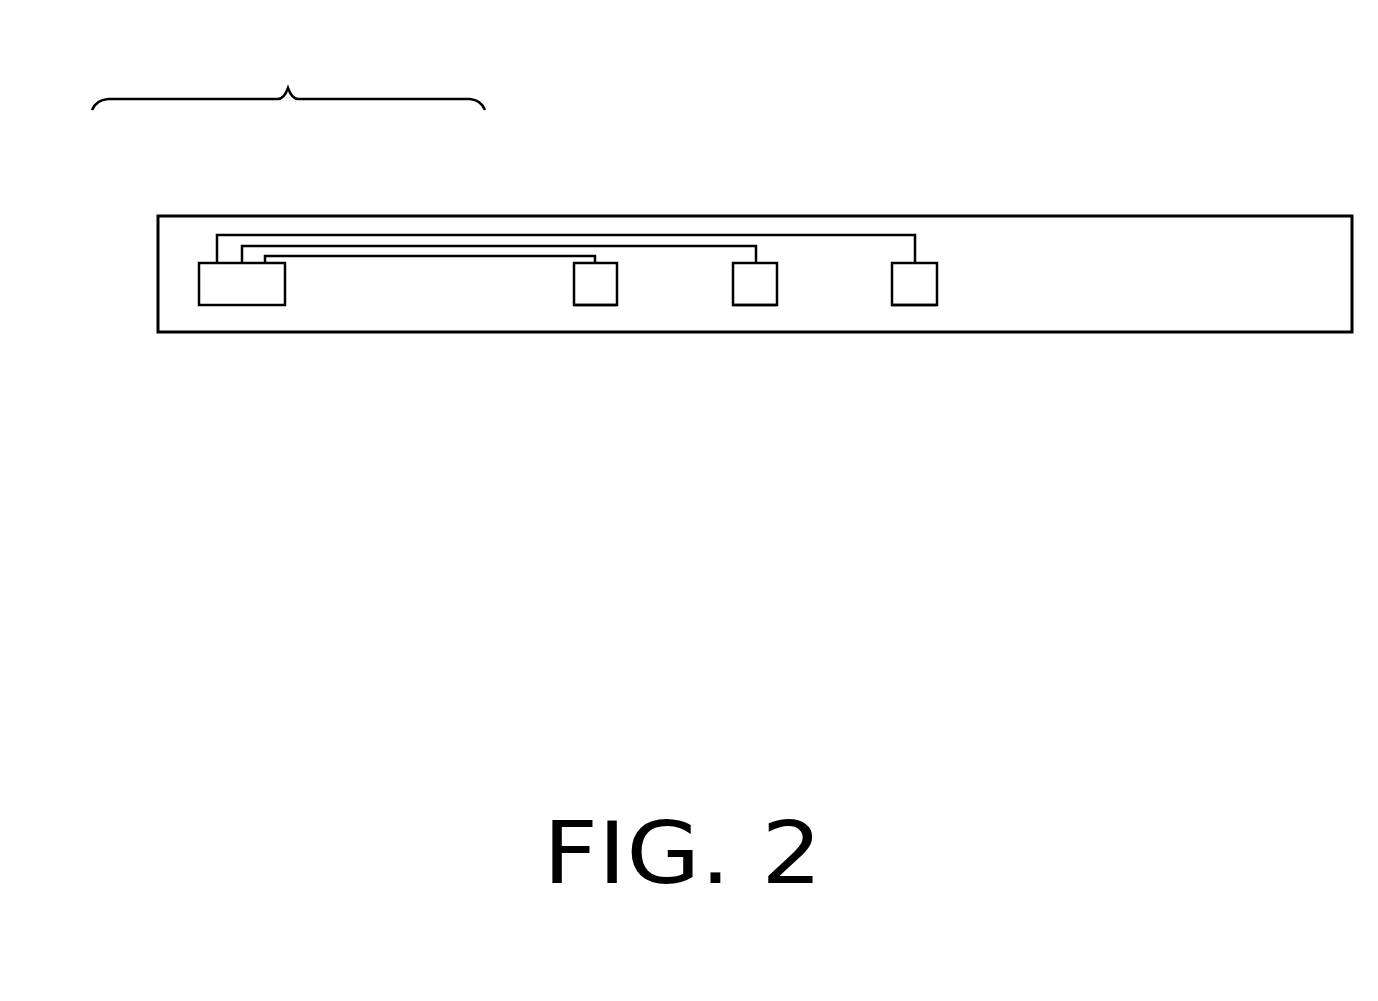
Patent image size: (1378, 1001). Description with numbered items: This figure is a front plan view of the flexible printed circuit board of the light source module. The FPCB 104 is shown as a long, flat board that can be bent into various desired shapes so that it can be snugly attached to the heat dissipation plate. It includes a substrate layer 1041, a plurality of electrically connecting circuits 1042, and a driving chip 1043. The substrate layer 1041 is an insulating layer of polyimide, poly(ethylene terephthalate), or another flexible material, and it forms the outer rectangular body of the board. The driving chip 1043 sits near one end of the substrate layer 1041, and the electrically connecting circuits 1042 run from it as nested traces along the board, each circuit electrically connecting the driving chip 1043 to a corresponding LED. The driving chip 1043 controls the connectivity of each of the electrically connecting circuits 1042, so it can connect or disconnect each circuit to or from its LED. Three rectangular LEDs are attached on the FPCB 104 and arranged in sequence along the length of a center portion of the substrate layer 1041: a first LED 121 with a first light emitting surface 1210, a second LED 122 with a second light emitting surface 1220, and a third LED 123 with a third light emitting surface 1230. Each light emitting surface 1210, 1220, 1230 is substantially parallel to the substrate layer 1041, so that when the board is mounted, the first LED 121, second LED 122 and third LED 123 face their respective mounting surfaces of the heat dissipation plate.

The FPCB 104 is at (288, 69).
The substrate layer 1041 is at (175, 268).
The electrically connecting circuits 1042 is at (400, 245).
The driving chip 1043 is at (240, 287).
The first LED 121 is at (617, 282).
The second LED 122 is at (778, 282).
The third LED 123 is at (937, 282).
The first light emitting surface 1210 is at (600, 288).
The second light emitting surface 1220 is at (757, 285).
The third light emitting surface 1230 is at (920, 285).